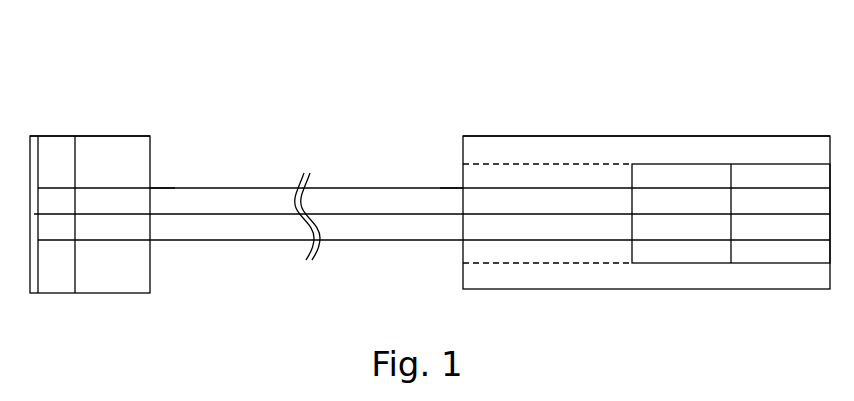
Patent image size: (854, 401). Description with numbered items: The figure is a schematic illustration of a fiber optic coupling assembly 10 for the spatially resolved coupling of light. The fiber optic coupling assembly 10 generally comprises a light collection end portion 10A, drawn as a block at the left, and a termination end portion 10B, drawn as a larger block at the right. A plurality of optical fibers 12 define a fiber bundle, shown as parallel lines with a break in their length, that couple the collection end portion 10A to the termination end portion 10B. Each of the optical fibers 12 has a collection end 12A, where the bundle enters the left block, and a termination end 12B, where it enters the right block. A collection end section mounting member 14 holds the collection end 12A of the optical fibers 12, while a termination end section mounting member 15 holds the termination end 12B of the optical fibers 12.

The fiber optic coupling assembly 10 is at (320, 70).
The light collection end portion 10A is at (95, 114).
The termination end portion 10B is at (675, 111).
The optical fibers 12 is at (338, 186).
The collection end 12A is at (157, 179).
The termination end 12B is at (450, 178).
The collection end section mounting member 14 is at (150, 136).
The termination end section mounting member 15 is at (740, 136).